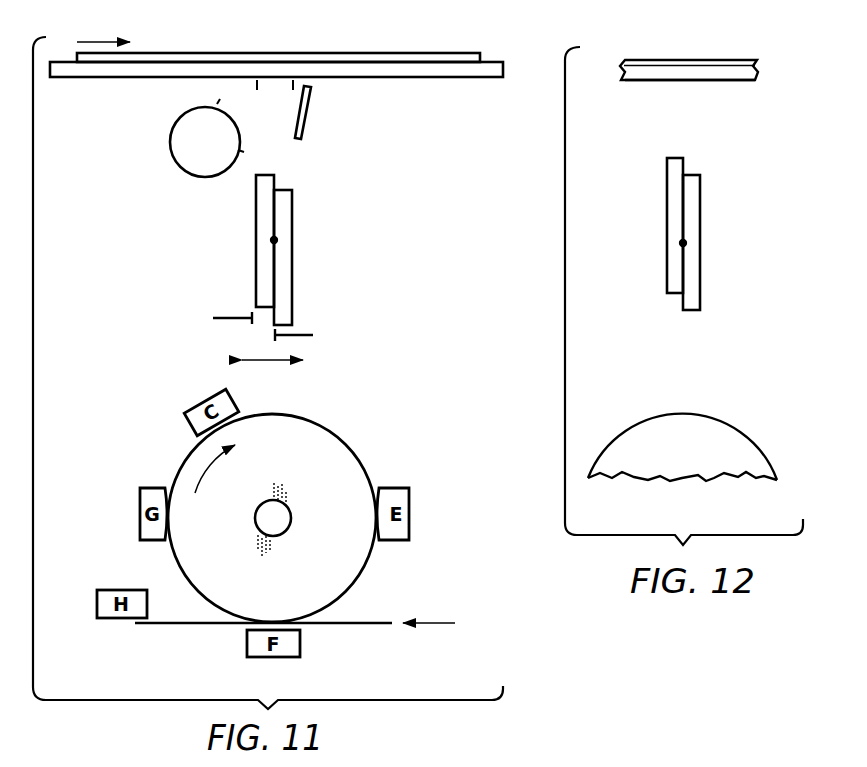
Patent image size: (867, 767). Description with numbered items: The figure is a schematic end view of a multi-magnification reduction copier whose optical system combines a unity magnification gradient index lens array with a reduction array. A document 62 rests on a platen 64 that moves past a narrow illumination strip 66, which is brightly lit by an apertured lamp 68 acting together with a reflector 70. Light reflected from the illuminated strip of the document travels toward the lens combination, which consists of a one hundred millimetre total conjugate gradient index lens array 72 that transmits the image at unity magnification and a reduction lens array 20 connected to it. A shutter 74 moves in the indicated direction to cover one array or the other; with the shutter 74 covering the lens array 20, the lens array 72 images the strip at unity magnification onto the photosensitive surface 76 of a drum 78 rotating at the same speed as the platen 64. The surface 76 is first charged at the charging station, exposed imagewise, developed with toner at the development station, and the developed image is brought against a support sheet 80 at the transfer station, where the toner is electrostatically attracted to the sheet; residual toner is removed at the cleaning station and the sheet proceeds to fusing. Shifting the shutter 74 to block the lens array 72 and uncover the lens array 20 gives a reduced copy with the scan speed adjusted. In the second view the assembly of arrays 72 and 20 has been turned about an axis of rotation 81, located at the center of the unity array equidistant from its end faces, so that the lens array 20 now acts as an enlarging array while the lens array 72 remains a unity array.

In FIG. 11, the reduction lens array 20 is at (291, 216).
In FIG. 12, the reduction lens array 20 is at (667, 199).
In FIG. 11, the document 62 is at (412, 56).
In FIG. 12, the document 62 is at (708, 58).
In FIG. 11, the platen 64 is at (447, 77).
In FIG. 12, the platen 64 is at (713, 80).
In FIG. 11, the illumination strip 66 is at (276, 84).
In FIG. 11, the apertured lamp 68 is at (183, 172).
In FIG. 11, the reflector 70 is at (306, 128).
In FIG. 11, the gradient index lens array 72 is at (257, 218).
In FIG. 12, the gradient index lens array 72 is at (695, 292).
In FIG. 11, the shutter 74 is at (213, 318).
In FIG. 11, the photosensitive surface 76 is at (319, 421).
In FIG. 11, the drum 78 is at (336, 457).
In FIG. 12, the drum 78 is at (745, 448).
In FIG. 11, the support sheet 80 is at (356, 623).
In FIG. 11, the axis of rotation 81 is at (274, 240).
In FIG. 12, the axis of rotation 81 is at (683, 243).